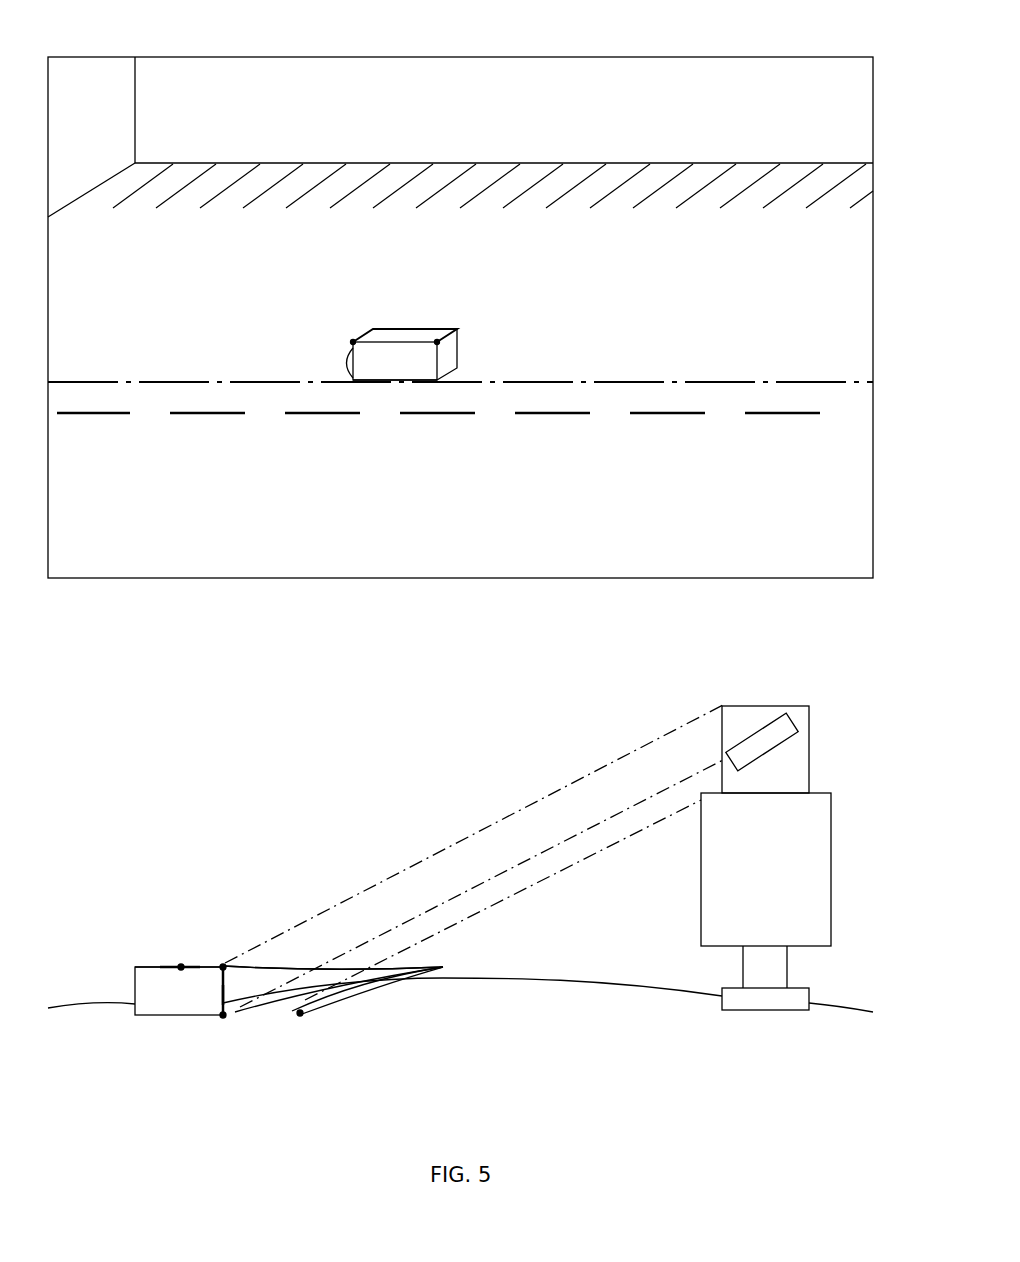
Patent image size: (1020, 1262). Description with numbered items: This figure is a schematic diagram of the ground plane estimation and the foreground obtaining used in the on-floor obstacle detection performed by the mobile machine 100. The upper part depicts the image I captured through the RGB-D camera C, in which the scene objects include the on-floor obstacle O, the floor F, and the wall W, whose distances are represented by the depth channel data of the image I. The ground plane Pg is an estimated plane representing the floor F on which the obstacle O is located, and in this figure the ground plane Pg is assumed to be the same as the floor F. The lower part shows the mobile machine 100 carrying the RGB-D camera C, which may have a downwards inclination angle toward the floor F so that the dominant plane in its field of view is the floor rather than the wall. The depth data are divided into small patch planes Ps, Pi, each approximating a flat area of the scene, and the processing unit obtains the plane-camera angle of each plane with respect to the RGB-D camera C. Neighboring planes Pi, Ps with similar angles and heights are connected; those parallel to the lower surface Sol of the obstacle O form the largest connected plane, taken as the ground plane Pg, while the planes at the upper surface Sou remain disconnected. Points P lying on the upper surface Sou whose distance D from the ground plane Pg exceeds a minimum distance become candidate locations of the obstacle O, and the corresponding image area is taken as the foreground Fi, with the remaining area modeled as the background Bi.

The mobile machine 100 is at (763, 707).
The image I is at (700, 57).
The wall W is at (255, 137).
The floor F is at (767, 283).
The ground plane Pg is at (735, 381).
The on-floor obstacle O is at (352, 340).
The upper surface of the obstacle Sou is at (410, 329).
The lower surface of the obstacle Sol is at (398, 381).
The points P is at (353, 341).
The distance D is at (345, 362).
The foreground Fi is at (428, 318).
The background Bi is at (698, 271).
The planes Pi is at (475, 413).
The planes Ps is at (181, 966).
The RGB-D camera C is at (750, 727).